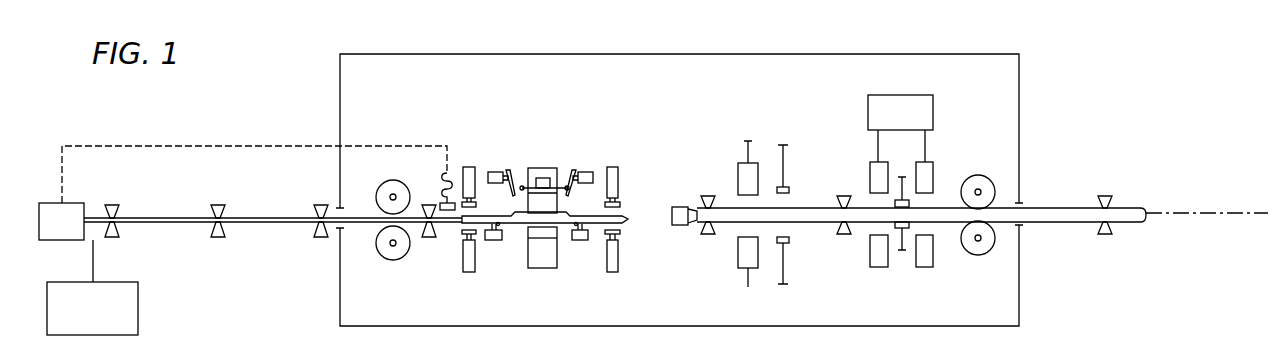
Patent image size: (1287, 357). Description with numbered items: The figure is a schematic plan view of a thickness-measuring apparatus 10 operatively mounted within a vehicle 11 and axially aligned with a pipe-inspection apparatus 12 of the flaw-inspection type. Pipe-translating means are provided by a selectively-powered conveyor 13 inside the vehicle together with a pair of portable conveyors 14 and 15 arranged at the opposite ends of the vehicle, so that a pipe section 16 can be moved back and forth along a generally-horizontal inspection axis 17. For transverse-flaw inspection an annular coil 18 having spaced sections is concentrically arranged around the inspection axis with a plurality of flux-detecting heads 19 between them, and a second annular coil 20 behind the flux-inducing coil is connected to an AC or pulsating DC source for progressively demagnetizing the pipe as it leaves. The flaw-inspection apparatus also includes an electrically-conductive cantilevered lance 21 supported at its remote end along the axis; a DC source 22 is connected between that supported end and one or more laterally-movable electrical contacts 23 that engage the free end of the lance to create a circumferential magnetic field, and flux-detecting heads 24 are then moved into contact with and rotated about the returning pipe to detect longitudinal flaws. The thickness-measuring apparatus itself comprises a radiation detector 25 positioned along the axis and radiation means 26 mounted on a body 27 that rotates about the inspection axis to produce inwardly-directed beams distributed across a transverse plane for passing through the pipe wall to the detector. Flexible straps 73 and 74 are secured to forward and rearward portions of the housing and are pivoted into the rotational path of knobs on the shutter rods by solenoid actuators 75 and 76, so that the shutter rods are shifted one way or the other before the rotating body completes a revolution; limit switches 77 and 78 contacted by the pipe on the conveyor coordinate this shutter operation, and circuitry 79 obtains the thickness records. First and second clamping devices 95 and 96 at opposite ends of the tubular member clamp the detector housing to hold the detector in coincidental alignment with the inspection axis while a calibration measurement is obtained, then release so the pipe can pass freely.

The thickness-measuring apparatus 10 is at (605, 124).
The vehicle 11 is at (973, 314).
The pipe-inspection apparatus 12 is at (786, 113).
The conveyor 13 is at (846, 235).
The portable conveyor 14 is at (225, 233).
The portable conveyor 15 is at (1105, 235).
The pipe section 16 is at (1060, 208).
The inspection axis 17 is at (1225, 214).
The annular coil 18 is at (935, 167).
The flux-detecting heads 19 is at (906, 236).
The second annular coil 20 is at (740, 252).
The lance 21 is at (178, 223).
The DC source 22 is at (49, 233).
The electrical contacts 23 is at (452, 200).
The flux-detecting heads 24 is at (790, 186).
The radiation detector 25 is at (521, 224).
The radiation means 26 is at (549, 176).
The body 27 is at (553, 262).
The strap 73 is at (511, 170).
The strap 74 is at (569, 182).
The solenoid actuator 75 is at (494, 172).
The solenoid actuator 76 is at (594, 172).
The limit switch 77 is at (490, 242).
The limit switch 78 is at (581, 242).
The circuitry 79 is at (78, 318).
The first clamping device 95 is at (445, 270).
The second clamping device 96 is at (632, 268).